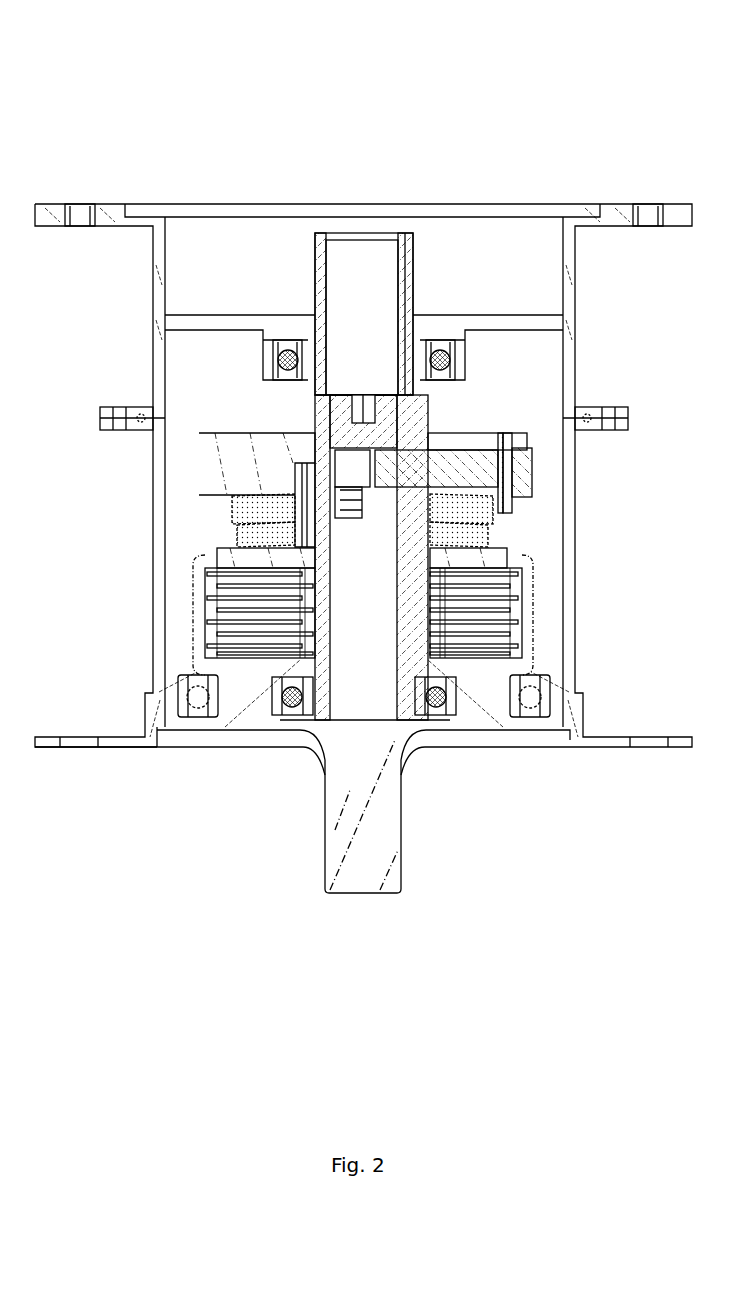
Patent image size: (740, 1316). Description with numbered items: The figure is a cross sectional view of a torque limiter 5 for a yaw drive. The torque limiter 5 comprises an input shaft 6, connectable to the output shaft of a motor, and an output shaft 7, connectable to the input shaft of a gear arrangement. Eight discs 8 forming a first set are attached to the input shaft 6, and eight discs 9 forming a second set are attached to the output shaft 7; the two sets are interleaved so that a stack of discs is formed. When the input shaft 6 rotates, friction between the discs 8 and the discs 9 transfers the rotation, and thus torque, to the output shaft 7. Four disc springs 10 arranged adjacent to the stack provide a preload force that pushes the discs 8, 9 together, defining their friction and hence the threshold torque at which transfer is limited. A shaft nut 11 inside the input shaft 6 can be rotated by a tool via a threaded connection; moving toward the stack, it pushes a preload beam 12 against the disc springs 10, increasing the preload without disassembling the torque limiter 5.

The torque limiter 5 is at (592, 92).
The input shaft 6 is at (318, 296).
The output shaft 7 is at (368, 827).
The discs 8 is at (228, 643).
The discs 9 is at (512, 640).
The disc springs 10 is at (245, 543).
The shaft nut 11 is at (387, 414).
The preload beam 12 is at (520, 468).